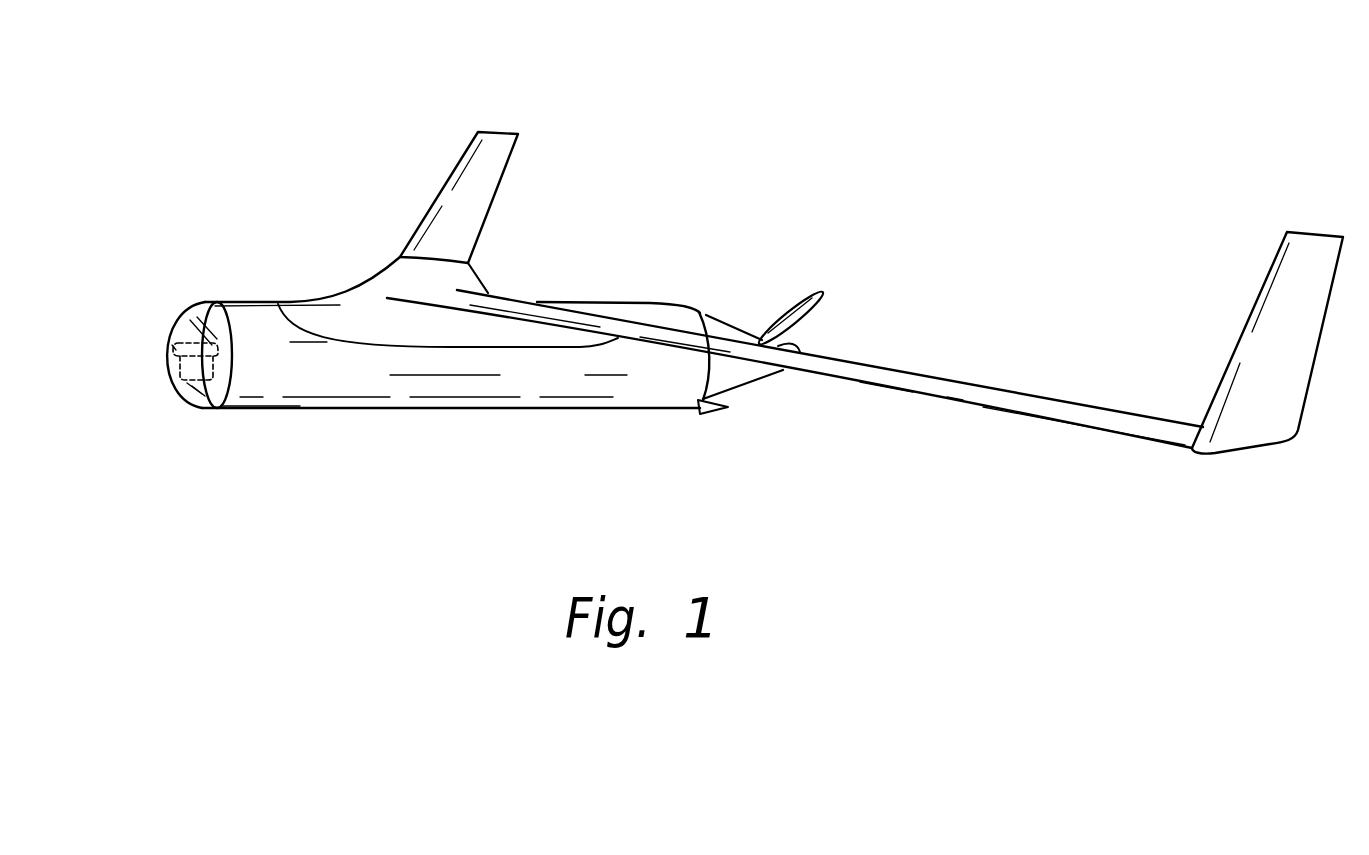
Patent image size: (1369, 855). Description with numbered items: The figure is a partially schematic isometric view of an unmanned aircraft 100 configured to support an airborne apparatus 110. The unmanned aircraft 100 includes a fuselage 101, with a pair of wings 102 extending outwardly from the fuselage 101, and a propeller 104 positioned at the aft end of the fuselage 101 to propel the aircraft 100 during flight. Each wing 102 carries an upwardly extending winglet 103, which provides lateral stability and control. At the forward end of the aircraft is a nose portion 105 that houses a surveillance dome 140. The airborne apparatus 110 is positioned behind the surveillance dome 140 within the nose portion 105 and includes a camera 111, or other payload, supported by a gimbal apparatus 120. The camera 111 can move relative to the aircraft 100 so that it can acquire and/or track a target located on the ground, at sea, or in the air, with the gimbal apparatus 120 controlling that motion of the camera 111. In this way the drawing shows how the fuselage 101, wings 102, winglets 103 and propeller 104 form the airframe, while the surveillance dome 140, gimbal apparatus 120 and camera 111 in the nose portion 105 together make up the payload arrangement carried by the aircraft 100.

The unmanned aircraft 100 is at (693, 209).
The fuselage 101 is at (397, 408).
The wings 102 is at (426, 281).
The winglet 103 is at (424, 195).
The propeller 104 is at (776, 317).
The nose portion 105 is at (231, 423).
The airborne apparatus 110 is at (168, 362).
The camera 111 is at (186, 400).
The gimbal apparatus 120 is at (230, 303).
The surveillance dome 140 is at (168, 328).